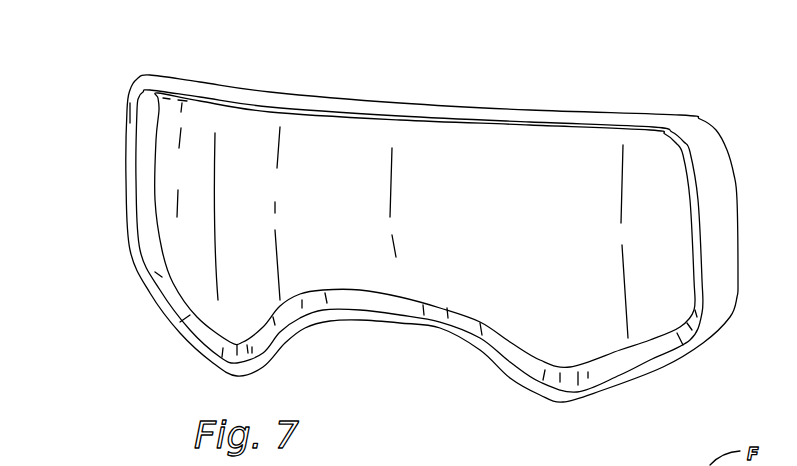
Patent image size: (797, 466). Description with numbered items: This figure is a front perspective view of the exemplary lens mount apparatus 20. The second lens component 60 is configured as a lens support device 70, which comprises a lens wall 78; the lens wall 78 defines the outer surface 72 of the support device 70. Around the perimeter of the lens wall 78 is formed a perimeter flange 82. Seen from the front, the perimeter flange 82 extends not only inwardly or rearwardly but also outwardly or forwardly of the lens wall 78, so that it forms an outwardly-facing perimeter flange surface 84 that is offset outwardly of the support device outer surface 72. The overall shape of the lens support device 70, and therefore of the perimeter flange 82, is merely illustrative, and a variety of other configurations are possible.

The lens mount apparatus 20 is at (405, 217).
The second lens component 60 is at (88, 315).
The lens support device 70 is at (81, 277).
The outer surface 72 is at (503, 147).
The lens wall 78 is at (580, 160).
The perimeter flange 82 is at (710, 177).
The perimeter flange surface 84 is at (128, 107).